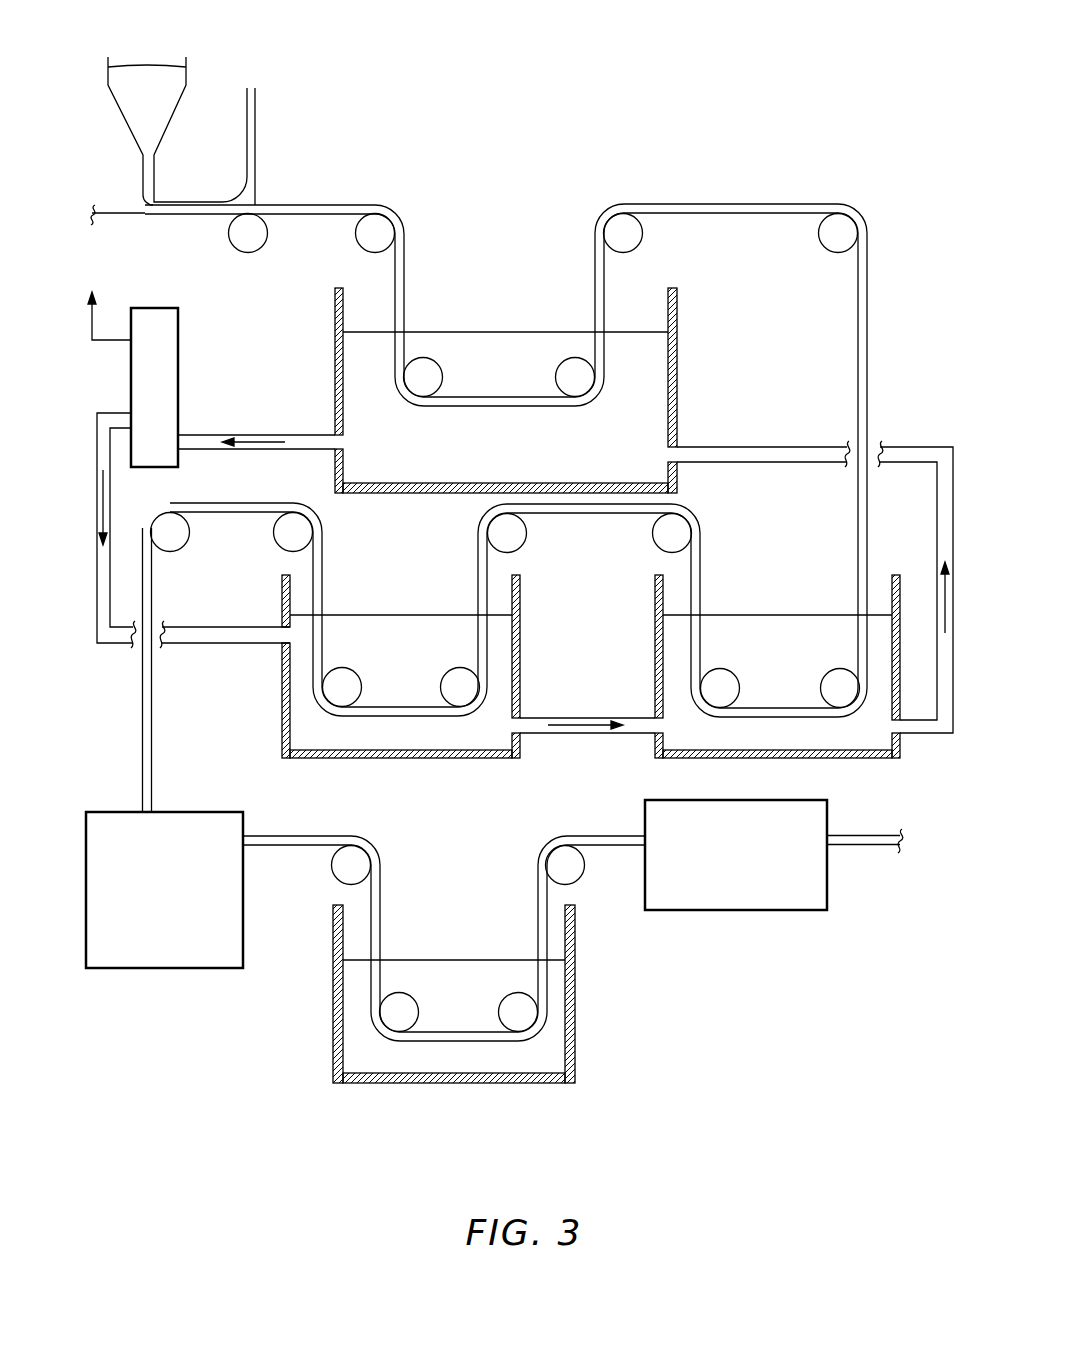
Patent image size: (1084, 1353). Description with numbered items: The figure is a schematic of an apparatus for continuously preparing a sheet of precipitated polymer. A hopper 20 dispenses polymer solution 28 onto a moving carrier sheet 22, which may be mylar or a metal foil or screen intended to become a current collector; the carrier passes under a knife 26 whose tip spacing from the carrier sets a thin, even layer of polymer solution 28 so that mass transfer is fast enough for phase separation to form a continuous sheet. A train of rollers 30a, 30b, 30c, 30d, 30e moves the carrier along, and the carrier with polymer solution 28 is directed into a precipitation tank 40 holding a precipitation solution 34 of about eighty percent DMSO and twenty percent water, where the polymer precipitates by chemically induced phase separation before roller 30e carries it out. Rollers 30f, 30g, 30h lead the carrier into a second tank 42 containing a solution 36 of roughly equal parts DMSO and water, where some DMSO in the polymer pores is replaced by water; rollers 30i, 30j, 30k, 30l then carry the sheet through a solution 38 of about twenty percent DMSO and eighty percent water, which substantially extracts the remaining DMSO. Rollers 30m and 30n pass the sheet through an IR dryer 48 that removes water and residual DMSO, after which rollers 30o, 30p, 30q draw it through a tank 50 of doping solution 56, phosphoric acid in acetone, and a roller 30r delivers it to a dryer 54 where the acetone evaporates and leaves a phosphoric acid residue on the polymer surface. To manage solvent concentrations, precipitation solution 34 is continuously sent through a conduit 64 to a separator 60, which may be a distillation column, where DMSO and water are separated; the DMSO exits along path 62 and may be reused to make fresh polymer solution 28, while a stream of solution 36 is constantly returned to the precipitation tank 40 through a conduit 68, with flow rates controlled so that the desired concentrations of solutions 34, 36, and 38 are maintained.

The hopper 20 is at (187, 57).
The carrier sheet 22 is at (110, 215).
The knife 26 is at (252, 113).
The polymer solution 28 is at (390, 205).
The roller 30a is at (243, 240).
The roller 30b is at (373, 240).
The roller 30c is at (428, 372).
The roller 30d is at (573, 370).
The roller 30e is at (628, 235).
The roller 30f is at (833, 243).
The roller 30g is at (830, 683).
The roller 30h is at (720, 680).
The roller 30i is at (665, 540).
The roller 30j is at (513, 542).
The roller 30k is at (460, 677).
The roller 30l is at (340, 677).
The roller 30m is at (282, 540).
The roller 30n is at (170, 548).
The roller 30o is at (343, 868).
The roller 30p is at (407, 1003).
The roller 30q is at (525, 1002).
The roller 30r is at (575, 877).
The precipitation solution 34 is at (430, 330).
The solution 36 is at (822, 610).
The solution 38 is at (348, 615).
The precipitation tank 40 is at (675, 365).
The second tank 42 is at (853, 760).
The IR dryer 48 is at (172, 810).
The tank 50 is at (575, 1010).
The dryer 54 is at (755, 912).
The doping solution 56 is at (423, 958).
The separator 60 is at (178, 370).
The path 62 is at (113, 342).
The conduit 64 is at (268, 453).
The conduit 68 is at (907, 445).